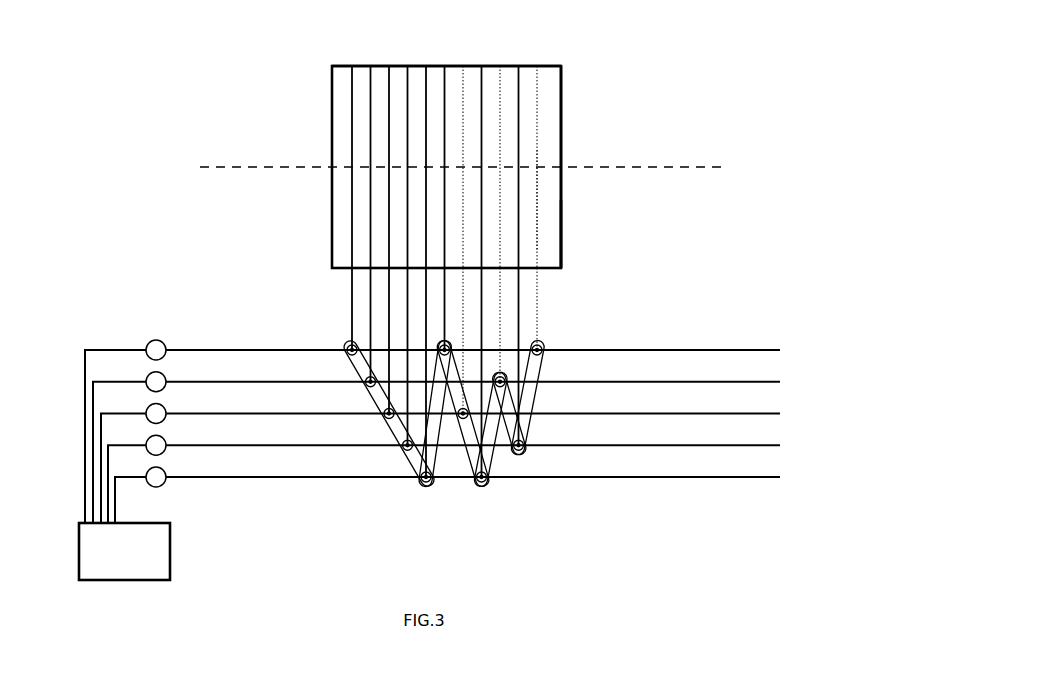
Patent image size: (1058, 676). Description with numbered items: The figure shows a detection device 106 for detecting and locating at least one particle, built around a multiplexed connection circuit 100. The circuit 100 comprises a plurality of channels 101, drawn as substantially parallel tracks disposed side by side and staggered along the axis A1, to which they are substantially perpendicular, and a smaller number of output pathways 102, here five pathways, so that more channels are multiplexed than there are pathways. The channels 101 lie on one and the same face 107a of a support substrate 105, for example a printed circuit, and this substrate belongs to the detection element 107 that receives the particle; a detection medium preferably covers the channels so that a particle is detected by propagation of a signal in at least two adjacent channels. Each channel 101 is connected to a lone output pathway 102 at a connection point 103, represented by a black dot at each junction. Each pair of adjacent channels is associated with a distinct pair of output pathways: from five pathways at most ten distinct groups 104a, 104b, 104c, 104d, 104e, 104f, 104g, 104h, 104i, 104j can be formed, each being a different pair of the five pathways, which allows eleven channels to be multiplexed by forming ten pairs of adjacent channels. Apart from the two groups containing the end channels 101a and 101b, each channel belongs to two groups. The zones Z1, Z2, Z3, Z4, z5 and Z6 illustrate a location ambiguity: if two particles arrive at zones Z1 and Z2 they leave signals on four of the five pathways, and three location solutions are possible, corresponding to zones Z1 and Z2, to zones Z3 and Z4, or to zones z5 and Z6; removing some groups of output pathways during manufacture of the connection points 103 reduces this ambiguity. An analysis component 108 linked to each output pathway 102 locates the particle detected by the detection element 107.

The multiplexed connection circuit 100 is at (602, 310).
The channels 101 is at (518, 93).
The end channel 101a is at (350, 302).
The end channel 101b is at (537, 288).
The output pathways 102 is at (230, 350).
The connection points 103 is at (523, 449).
The group of output pathways 104a is at (347, 354).
The group of output pathways 104b is at (366, 387).
The group of output pathways 104c is at (386, 420).
The group of output pathways 104d is at (406, 452).
The group of output pathways 104e is at (436, 445).
The group of output pathways 104f is at (462, 363).
The group of output pathways 104g is at (467, 448).
The group of output pathways 104h is at (492, 455).
The group of output pathways 104i is at (508, 449).
The group of output pathways 104j is at (542, 366).
The support substrate 105 is at (560, 250).
The detection device 106 is at (292, 117).
The detection element 107 is at (567, 73).
The face of the support substrate 107a is at (552, 202).
The analysis component 108 is at (163, 541).
The axis A1 is at (449, 168).
The zone Z1 is at (359, 204).
The zone Z2 is at (472, 183).
The zone Z3 is at (432, 147).
The zone Z4 is at (378, 92).
The zone z5 is at (453, 138).
The zone Z6 is at (485, 218).